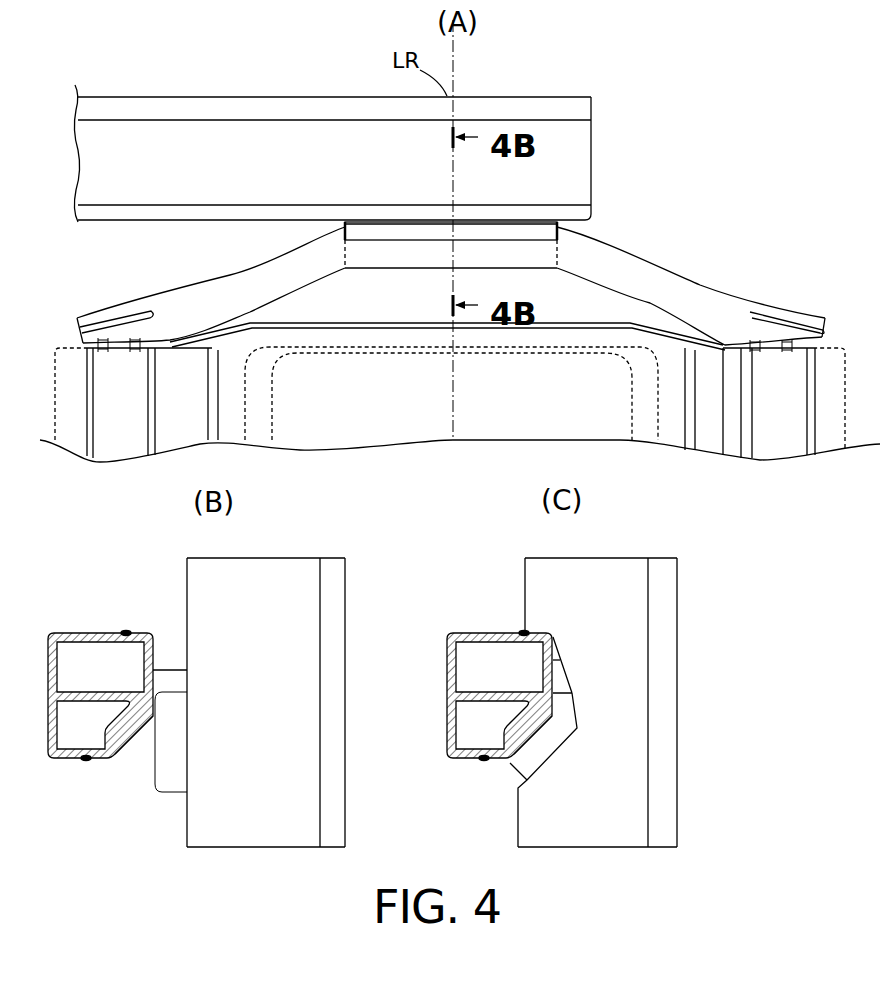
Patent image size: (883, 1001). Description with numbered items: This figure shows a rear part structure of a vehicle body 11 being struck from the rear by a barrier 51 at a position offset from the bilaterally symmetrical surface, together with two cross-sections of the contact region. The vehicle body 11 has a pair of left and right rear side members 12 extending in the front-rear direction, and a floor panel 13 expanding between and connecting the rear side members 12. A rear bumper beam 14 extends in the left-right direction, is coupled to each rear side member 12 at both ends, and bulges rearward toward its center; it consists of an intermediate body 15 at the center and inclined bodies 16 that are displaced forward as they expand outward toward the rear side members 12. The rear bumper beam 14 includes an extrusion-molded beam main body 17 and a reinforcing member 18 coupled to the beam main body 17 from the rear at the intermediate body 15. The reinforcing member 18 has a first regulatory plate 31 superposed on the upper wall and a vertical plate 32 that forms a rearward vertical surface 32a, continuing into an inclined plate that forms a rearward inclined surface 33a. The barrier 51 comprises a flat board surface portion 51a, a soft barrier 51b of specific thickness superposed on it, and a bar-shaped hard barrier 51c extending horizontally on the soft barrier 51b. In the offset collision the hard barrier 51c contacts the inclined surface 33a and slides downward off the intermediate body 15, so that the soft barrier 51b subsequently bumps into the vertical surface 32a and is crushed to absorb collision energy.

The vehicle body 11 is at (752, 270).
The rear side member 12 is at (112, 432).
The floor panel 13 is at (390, 342).
The rear bumper beam 14 is at (670, 278).
The intermediate body 15 is at (524, 275).
The inclined body 16 is at (302, 289).
The beam main body 17 is at (388, 270).
The reinforcing member 18 is at (486, 220).
The first regulatory plate 31 is at (386, 238).
The vertical plate 32 is at (366, 220).
The vertical surface 32a is at (157, 671).
The inclined surface 33a is at (140, 735).
The barrier 51 is at (591, 165).
The flat board surface portion 51a is at (580, 107).
The soft barrier 51b is at (583, 180).
The hard barrier 51c is at (583, 213).